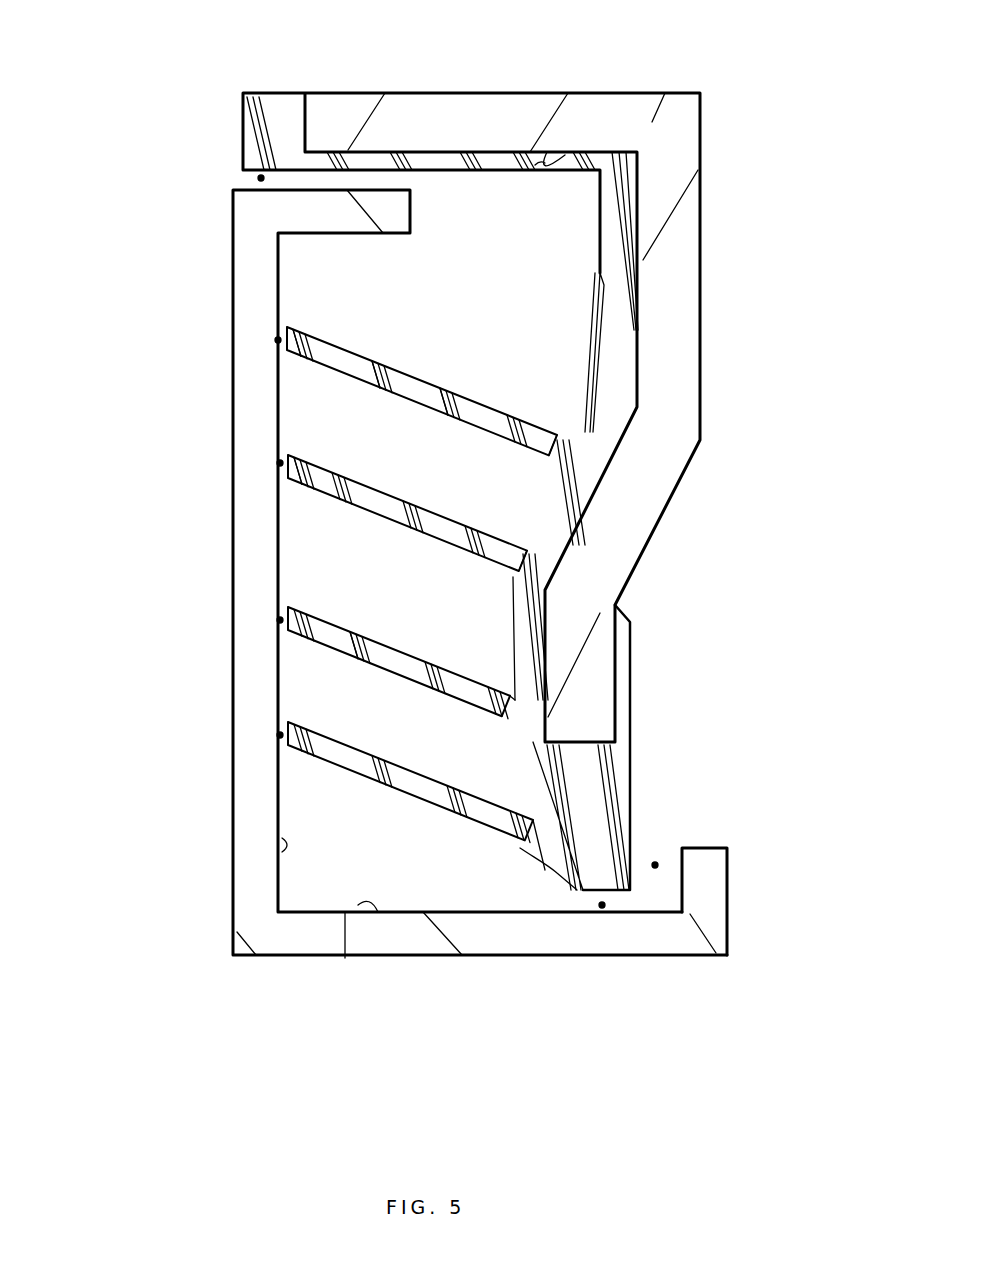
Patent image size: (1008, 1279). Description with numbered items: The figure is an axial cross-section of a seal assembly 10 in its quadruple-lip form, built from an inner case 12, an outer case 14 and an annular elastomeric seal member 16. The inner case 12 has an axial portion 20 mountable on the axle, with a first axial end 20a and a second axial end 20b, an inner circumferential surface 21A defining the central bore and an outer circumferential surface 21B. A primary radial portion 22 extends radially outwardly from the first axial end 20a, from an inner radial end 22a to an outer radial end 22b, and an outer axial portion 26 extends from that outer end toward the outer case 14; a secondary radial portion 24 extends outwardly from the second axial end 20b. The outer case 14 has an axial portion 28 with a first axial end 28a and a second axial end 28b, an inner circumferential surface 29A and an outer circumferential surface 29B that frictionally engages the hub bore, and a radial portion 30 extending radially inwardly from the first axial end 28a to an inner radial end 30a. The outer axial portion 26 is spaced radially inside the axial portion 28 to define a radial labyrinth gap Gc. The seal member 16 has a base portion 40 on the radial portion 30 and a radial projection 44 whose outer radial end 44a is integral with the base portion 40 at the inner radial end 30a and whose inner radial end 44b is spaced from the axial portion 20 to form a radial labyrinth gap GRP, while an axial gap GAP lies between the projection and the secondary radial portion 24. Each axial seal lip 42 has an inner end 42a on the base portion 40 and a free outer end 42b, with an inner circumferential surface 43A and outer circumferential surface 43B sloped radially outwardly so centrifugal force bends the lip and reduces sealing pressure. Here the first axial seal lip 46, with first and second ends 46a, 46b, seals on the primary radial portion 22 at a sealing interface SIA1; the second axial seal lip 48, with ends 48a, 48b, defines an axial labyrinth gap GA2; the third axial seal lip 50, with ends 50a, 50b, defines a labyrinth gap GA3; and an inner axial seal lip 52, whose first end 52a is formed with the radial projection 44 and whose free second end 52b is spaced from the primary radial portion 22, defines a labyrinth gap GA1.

The seal assembly 10 is at (797, 150).
The inner case 12 is at (137, 385).
The outer case 14 is at (742, 282).
The seal member 16 is at (548, 272).
The axial portion 20 is at (491, 958).
The first axial end 20a is at (273, 938).
The second axial end 20b is at (690, 958).
The inner circumferential surface 21A is at (232, 808).
The outer circumferential surface 21B is at (272, 840).
The primary radial portion 22 is at (236, 505).
The inner radial end 22a is at (250, 886).
The outer radial end 22b is at (250, 236).
The secondary radial portion 24 is at (730, 885).
The outer axial portion 26 is at (405, 213).
The axial portion 28 is at (514, 92).
The first axial end 28a is at (660, 95).
The second axial end 28b is at (334, 92).
The inner circumferential surface 29A is at (567, 150).
The outer circumferential surface 29B is at (445, 92).
The radial portion 30 is at (708, 378).
The inner radial end 30a is at (588, 727).
The base portion 40 is at (574, 543).
The axial seal lip 42 is at (474, 372).
The first inner end 42a is at (540, 462).
The second free outer end 42b is at (312, 328).
The inner circumferential surface 43A is at (432, 380).
The outer circumferential surface 43B is at (410, 352).
The radial projection 44 is at (640, 790).
The outer radial end 44a is at (586, 760).
The inner radial end 44b is at (583, 895).
The first axial seal lip 46 is at (383, 632).
The first end 46a is at (504, 692).
The second end 46b is at (296, 608).
The second axial seal lip 48 is at (428, 505).
The first end 48a is at (513, 560).
The second free end 48b is at (298, 457).
The third axial seal lip 50 is at (490, 398).
The first end 50a is at (560, 442).
The second free end 50b is at (298, 330).
The inner axial seal lip 52 is at (386, 802).
The first end 52a is at (525, 835).
The second free end 52b is at (298, 725).
The radial labyrinth seal gap Gc is at (261, 178).
The labyrinth seal gap GA1 is at (280, 735).
The axial labyrinth seal gap GA2 is at (280, 463).
The labyrinth seal gap GA3 is at (278, 340).
The axial labyrinth seal gap GAP is at (655, 865).
The radial labyrinth seal gap GRP is at (602, 905).
The sealing interface SIA1 is at (280, 620).